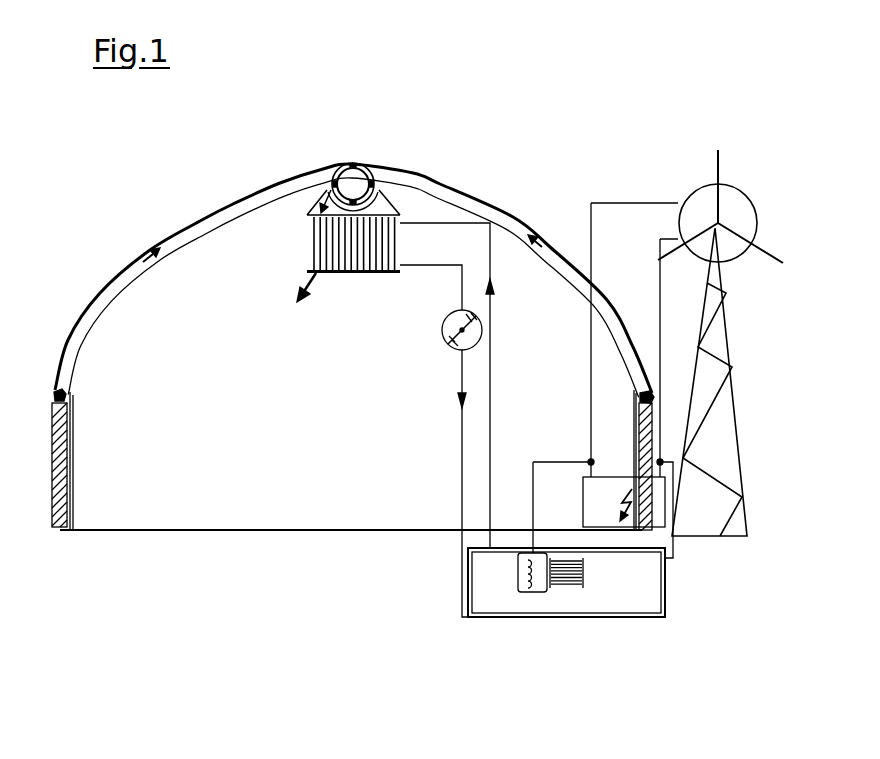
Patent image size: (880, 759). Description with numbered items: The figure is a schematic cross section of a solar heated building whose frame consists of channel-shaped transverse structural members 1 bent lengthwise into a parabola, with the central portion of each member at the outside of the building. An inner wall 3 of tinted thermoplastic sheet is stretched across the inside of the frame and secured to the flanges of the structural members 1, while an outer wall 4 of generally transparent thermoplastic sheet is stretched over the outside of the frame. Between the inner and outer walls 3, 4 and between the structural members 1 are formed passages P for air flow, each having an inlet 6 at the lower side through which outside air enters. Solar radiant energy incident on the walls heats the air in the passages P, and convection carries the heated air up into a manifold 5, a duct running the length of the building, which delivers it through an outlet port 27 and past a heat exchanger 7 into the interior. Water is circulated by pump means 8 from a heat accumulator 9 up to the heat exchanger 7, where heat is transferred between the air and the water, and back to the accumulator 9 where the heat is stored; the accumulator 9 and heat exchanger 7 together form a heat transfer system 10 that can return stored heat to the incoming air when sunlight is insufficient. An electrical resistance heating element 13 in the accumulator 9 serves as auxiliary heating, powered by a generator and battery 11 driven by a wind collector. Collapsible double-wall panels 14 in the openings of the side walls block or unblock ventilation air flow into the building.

The transverse structural member 1 is at (353, 274).
The inner wall 3 is at (135, 290).
The outer wall 4 is at (110, 284).
The passage P is at (512, 232).
The manifold 5 is at (360, 182).
The outlet port 27 is at (357, 207).
The heat exchanger 7 is at (375, 274).
The pump means 8 is at (443, 330).
The heat transfer system 10 is at (490, 380).
The generator and battery 11 is at (606, 477).
The inlet 6 is at (52, 400).
The collapsible panel 14 is at (74, 455).
The heat accumulator 9 is at (487, 602).
The electrical resistance heating element 13 is at (542, 583).